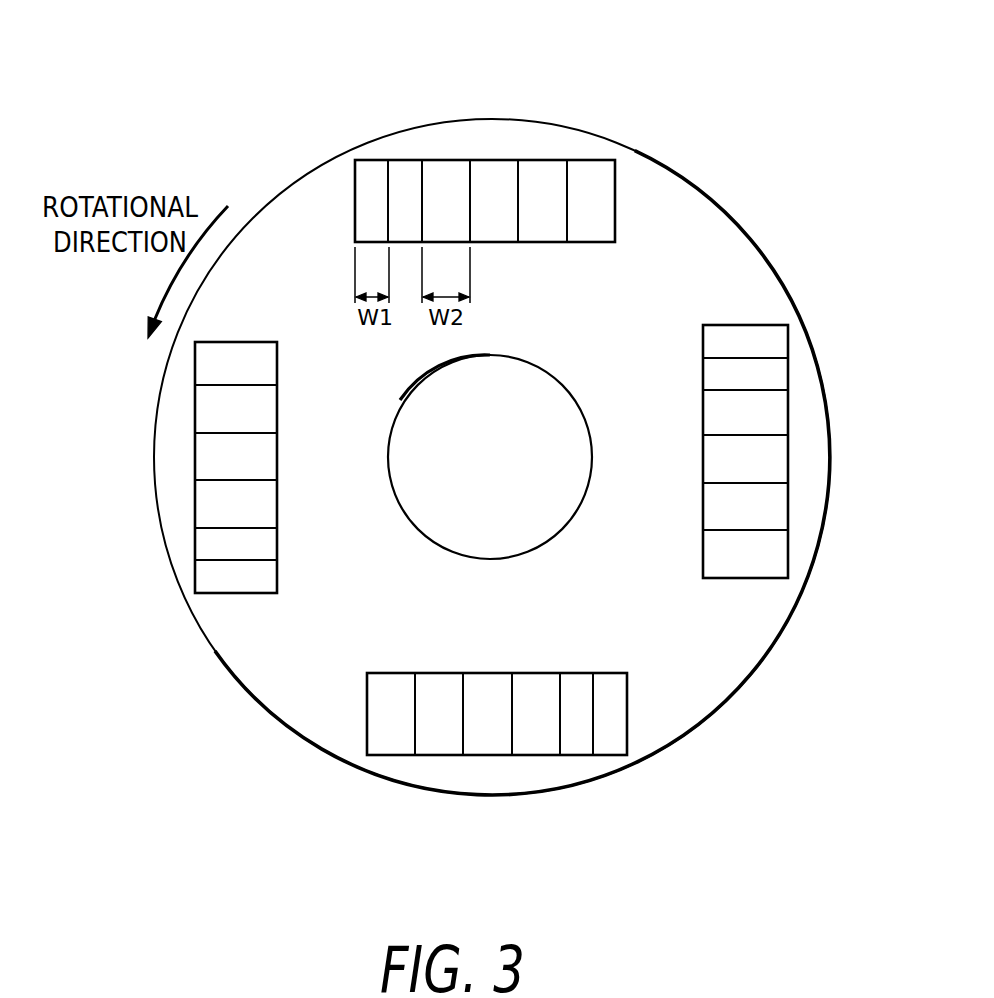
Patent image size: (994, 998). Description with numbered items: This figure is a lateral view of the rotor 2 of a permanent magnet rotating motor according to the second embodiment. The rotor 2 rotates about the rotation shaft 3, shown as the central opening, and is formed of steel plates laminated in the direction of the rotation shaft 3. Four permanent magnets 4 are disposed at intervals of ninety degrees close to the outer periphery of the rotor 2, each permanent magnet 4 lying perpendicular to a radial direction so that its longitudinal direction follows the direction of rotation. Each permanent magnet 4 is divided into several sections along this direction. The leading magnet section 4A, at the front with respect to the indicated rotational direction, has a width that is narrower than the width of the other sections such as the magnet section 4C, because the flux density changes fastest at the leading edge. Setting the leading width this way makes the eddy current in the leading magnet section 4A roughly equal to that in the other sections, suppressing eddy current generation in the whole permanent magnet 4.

The rotor 2 is at (826, 368).
The rotation shaft 3 is at (558, 380).
The permanent magnet 4 is at (497, 448).
The leading magnet section 4A is at (372, 160).
The magnet section 4C is at (436, 160).